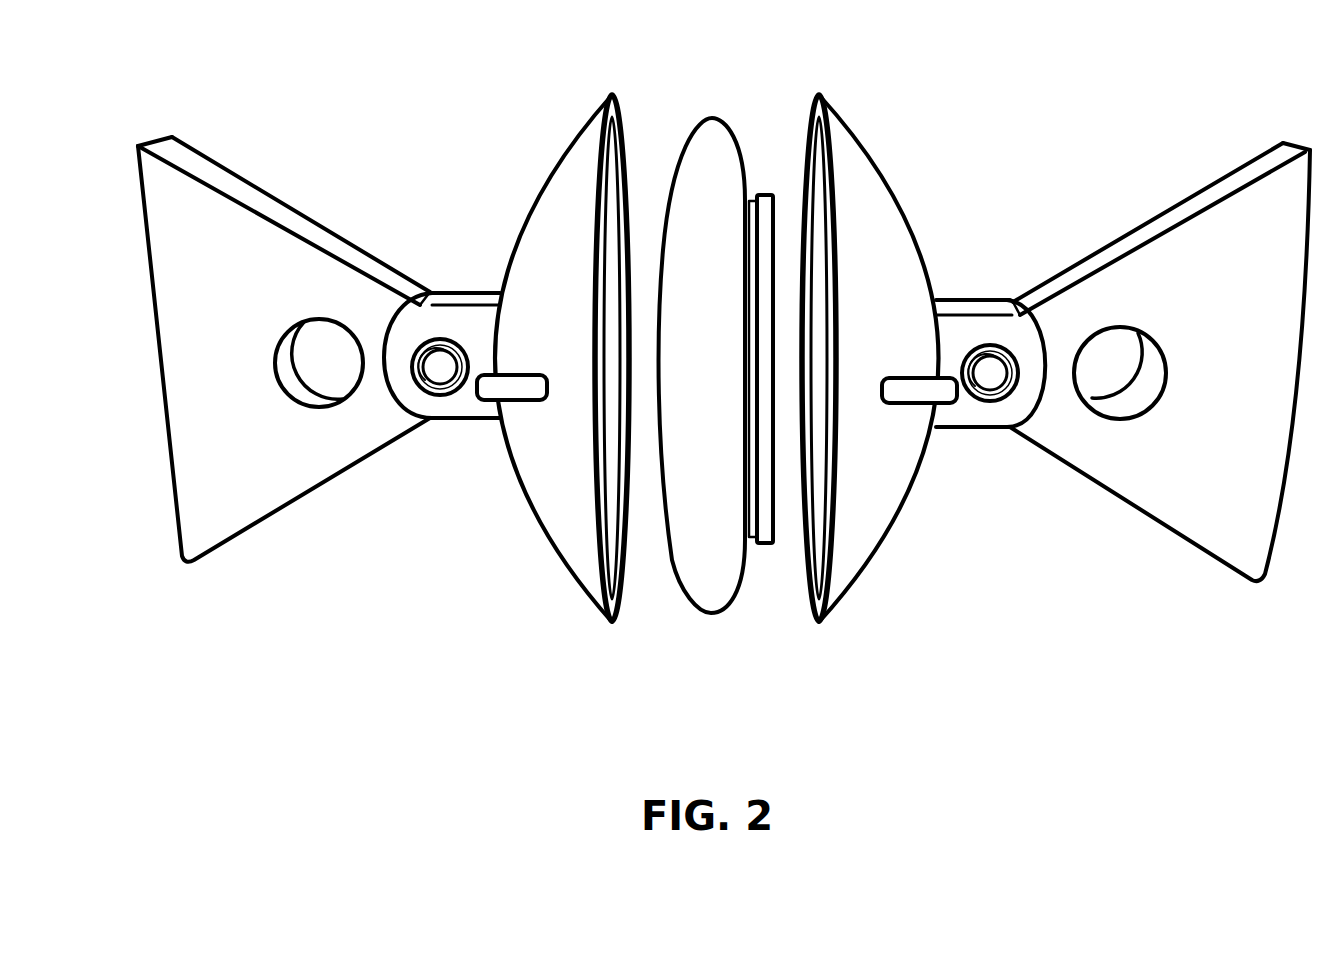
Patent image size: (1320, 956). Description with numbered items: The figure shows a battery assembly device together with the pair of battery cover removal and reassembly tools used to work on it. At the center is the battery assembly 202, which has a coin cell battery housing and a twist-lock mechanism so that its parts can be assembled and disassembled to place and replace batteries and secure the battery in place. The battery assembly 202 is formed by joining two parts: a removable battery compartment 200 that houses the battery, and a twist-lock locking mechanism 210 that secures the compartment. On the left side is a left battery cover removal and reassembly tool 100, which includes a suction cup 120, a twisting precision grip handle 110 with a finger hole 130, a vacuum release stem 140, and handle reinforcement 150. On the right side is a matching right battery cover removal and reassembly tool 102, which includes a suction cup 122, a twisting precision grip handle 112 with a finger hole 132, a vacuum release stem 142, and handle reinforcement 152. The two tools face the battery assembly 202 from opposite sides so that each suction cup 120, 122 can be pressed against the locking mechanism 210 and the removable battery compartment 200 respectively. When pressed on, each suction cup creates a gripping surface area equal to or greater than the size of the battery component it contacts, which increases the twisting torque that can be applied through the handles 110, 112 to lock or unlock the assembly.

The left battery cover removal and reassembly tool 100 is at (372, 128).
The right battery cover removal and reassembly tool 102 is at (1086, 162).
The twisting precision grip handle 110 is at (188, 430).
The twisting precision grip handle 112 is at (1262, 192).
The suction cup 120 is at (565, 160).
The suction cup 122 is at (900, 238).
The finger hole 130 is at (325, 367).
The finger hole 132 is at (1105, 387).
The vacuum release stem 140 is at (497, 390).
The vacuum release stem 142 is at (928, 393).
The handle reinforcement 150 is at (448, 347).
The handle reinforcement 152 is at (992, 343).
The removable battery compartment 200 is at (705, 133).
The battery assembly 202 is at (711, 645).
The twist-lock locking mechanism 210 is at (767, 208).